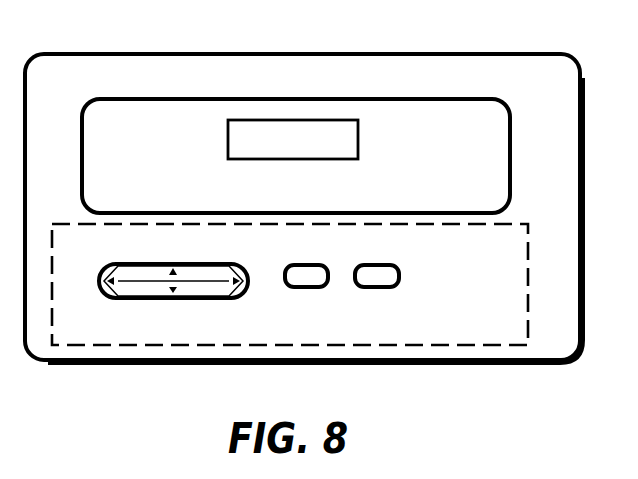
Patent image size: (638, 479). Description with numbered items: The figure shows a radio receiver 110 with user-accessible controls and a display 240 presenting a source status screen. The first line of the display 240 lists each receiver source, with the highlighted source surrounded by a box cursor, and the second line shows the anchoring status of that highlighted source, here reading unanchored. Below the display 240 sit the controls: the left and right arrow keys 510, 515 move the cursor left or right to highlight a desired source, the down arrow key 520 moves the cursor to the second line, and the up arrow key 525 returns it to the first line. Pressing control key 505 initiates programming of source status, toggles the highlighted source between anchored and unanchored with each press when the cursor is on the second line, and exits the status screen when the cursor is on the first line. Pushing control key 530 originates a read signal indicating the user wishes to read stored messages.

The radio receiver 110 is at (147, 430).
The display 240 is at (147, 98).
The control key 505 is at (303, 263).
The left arrow key 510 is at (99, 279).
The right arrow key 515 is at (248, 283).
The down arrow key 520 is at (162, 300).
The up arrow key 525 is at (162, 262).
The control key 530 is at (377, 265).